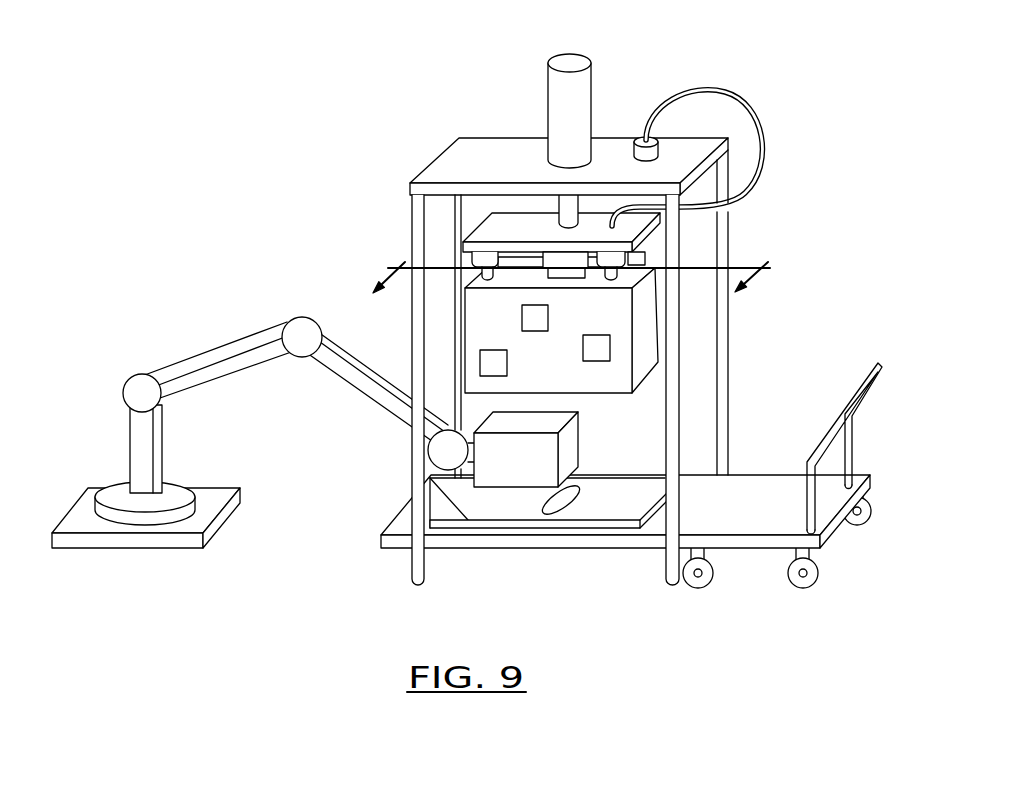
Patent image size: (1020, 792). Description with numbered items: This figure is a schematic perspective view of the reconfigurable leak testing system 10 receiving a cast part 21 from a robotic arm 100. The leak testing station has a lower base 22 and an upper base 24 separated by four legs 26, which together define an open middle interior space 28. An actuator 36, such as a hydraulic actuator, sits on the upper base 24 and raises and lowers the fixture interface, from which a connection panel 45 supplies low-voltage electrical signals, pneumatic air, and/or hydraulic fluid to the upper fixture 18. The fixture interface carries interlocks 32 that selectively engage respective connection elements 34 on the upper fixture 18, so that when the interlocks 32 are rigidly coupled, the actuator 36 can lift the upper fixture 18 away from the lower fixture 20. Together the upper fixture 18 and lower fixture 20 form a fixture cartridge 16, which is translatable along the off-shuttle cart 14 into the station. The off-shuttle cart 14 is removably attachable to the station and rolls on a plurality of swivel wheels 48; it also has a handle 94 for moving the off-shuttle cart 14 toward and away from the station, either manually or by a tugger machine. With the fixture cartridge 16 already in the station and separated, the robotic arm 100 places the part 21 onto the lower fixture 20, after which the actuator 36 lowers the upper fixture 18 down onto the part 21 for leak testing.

The reconfigurable leak testing system 10 is at (563, 282).
The off-shuttle cart 14 is at (605, 466).
The leak testing fixture cartridge 16 is at (564, 348).
The upper fixture 18 is at (462, 312).
The lower fixture 20 is at (564, 530).
The part 21 is at (510, 488).
The lower base 22 is at (400, 528).
The upper base 24 is at (468, 159).
The legs 26 is at (412, 453).
The open middle interior space 28 is at (586, 367).
The interlocks 32 is at (483, 257).
The connection elements 34 is at (487, 275).
The actuator 36 is at (563, 98).
The connection panel 45 is at (572, 257).
The swivel wheels 48 is at (848, 533).
The handle 94 is at (878, 366).
The robotic arm 100 is at (205, 352).